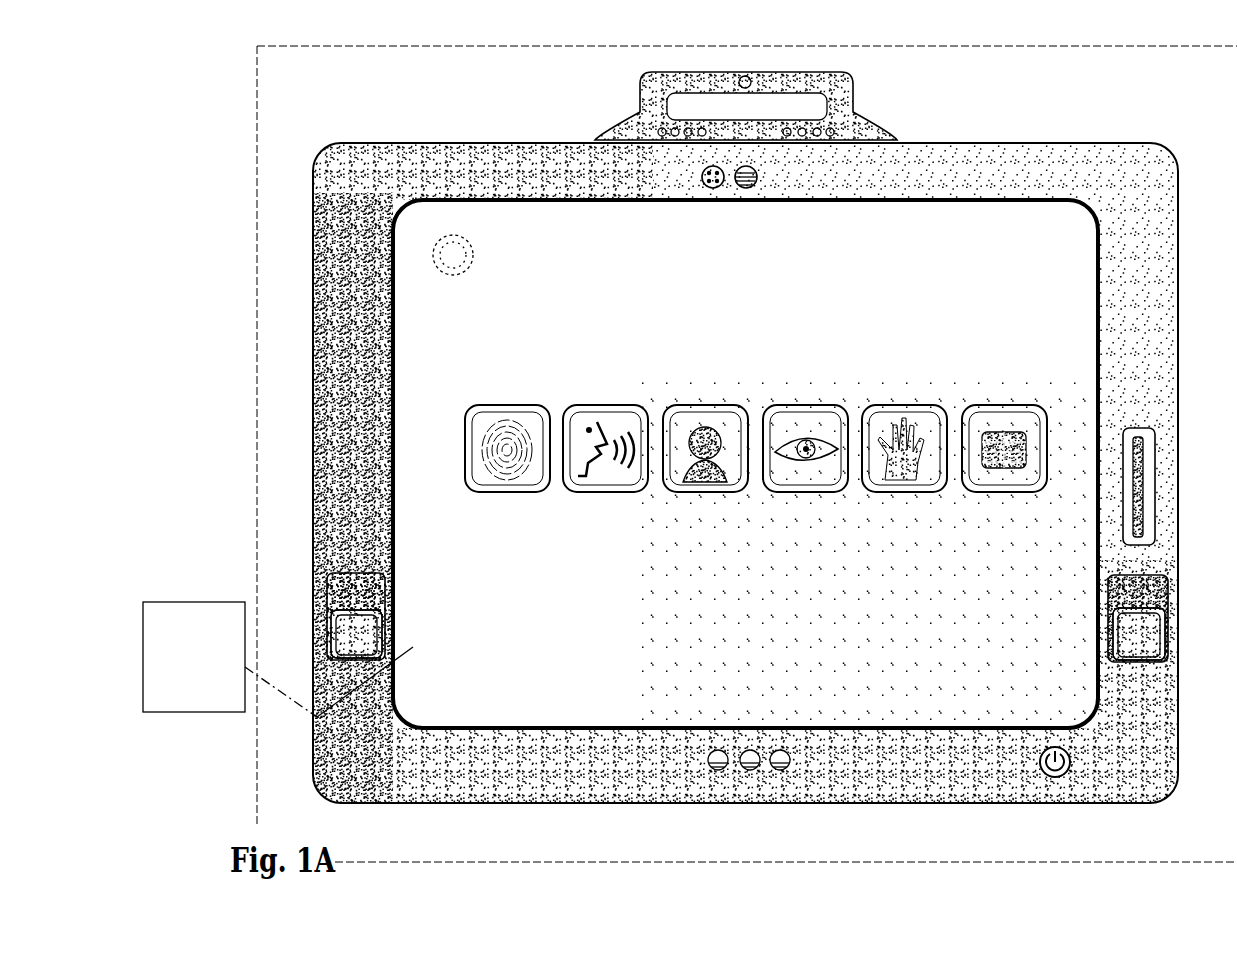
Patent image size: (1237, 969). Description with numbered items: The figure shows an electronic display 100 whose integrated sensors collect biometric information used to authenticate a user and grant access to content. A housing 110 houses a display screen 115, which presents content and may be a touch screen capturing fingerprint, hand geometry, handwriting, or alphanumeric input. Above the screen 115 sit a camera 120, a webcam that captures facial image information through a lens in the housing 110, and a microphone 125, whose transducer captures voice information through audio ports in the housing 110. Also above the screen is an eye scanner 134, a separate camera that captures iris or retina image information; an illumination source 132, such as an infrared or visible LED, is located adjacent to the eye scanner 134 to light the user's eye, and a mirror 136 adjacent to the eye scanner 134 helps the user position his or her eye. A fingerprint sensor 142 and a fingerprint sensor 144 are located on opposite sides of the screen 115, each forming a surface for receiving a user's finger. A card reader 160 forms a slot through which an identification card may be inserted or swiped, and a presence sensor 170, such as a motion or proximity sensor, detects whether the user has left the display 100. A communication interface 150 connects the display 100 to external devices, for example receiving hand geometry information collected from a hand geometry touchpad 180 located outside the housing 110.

The electronic display 100 is at (660, 454).
The housing 110 is at (745, 473).
The display screen 115 is at (745, 464).
The camera 120 is at (870, 202).
The microphone 125 is at (817, 227).
The illumination source 132 is at (660, 132).
The eye scanner 134 is at (930, 107).
The mirror 136 is at (663, 105).
The fingerprint sensor 142 is at (462, 610).
The fingerprint sensor 144 is at (1036, 630).
The communication interface 150 is at (413, 647).
The card reader 160 is at (1020, 498).
The presence sensor 170 is at (846, 793).
The hand geometry touchpad 180 is at (230, 659).